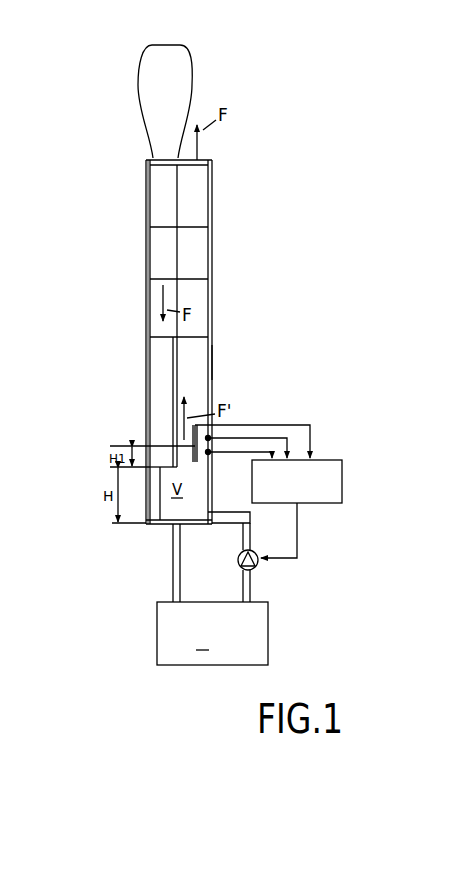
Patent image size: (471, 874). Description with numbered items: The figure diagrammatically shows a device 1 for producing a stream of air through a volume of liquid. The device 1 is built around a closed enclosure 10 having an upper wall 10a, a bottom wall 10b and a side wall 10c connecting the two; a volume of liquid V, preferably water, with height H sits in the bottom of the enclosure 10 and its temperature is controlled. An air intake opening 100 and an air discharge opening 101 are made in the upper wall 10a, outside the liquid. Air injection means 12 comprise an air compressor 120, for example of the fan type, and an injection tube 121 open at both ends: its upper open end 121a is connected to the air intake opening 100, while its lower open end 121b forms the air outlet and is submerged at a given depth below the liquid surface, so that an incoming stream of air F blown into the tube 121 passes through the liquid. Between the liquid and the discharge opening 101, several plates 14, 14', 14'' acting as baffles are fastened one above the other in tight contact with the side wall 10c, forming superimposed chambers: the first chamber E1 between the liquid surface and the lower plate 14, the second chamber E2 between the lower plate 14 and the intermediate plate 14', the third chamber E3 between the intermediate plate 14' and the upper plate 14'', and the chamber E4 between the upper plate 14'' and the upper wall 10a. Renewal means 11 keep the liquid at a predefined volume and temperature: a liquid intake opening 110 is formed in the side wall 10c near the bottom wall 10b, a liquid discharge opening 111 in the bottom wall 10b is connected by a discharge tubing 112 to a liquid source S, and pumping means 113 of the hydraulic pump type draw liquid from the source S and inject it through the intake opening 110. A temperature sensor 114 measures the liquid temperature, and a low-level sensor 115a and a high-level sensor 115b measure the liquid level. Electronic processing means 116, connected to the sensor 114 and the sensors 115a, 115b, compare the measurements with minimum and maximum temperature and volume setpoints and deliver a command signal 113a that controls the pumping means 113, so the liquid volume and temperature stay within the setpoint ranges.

The device for producing a stream of air 1 is at (292, 98).
The closed enclosure 10 is at (203, 204).
The upper wall 10a is at (211, 160).
The bottom wall 10b is at (165, 525).
The side wall 10c is at (214, 362).
The renewal means 11 is at (291, 613).
The air injection means 12 is at (212, 76).
The lower plate 14 is at (222, 323).
The intermediate plate 14' is at (224, 266).
The upper plate 14'' is at (227, 215).
The air intake opening 100 is at (152, 158).
The air discharge opening 101 is at (206, 156).
The intake opening for the liquid 110 is at (204, 526).
The discharge opening for the liquid 111 is at (213, 505).
The discharge tubing 112 is at (172, 590).
The pumping means 113 is at (257, 567).
The command signal 113a is at (298, 526).
The temperature sensor 114 is at (191, 440).
The low-level sensor 115a is at (229, 466).
The high-level sensor 115b is at (210, 437).
The electronic processing means 116 is at (343, 486).
The air compressor 120 is at (180, 58).
The injection tube 121 is at (147, 372).
The upper open end 121a is at (152, 157).
The lower open end 121b is at (160, 512).
The first chamber E1 is at (200, 374).
The second chamber E2 is at (191, 298).
The third chamber E3 is at (163, 253).
The fourth chamber E4 is at (199, 184).